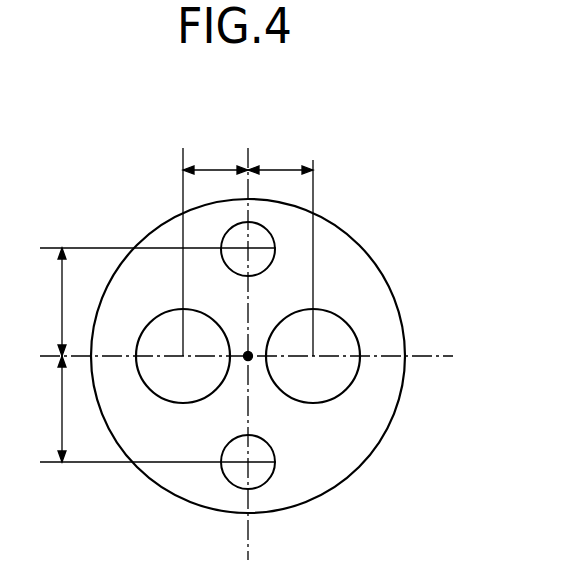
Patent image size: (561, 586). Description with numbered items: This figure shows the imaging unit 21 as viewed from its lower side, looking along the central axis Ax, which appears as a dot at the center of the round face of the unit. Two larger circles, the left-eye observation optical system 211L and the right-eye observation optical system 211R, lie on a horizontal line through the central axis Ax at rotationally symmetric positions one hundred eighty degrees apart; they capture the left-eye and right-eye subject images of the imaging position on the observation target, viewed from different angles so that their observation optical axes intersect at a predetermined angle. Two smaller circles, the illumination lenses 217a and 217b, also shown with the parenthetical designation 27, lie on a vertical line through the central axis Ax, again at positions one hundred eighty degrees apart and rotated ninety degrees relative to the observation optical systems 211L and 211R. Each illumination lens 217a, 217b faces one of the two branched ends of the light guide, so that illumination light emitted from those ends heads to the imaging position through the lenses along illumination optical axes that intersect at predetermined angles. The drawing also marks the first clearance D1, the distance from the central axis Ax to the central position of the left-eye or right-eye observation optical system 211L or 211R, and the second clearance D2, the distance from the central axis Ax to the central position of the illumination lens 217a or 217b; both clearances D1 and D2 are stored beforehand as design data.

The imaging unit 21 is at (367, 205).
The illumination lens 217a is at (365, 249).
The illumination lens 217b is at (277, 470).
The hole 27 is at (275, 250).
The left-eye observation optical system 211L is at (352, 330).
The right-eye observation optical system 211R is at (170, 403).
The central axis Ax is at (248, 356).
The first clearance D1 is at (248, 248).
The second clearance D2 is at (153, 355).